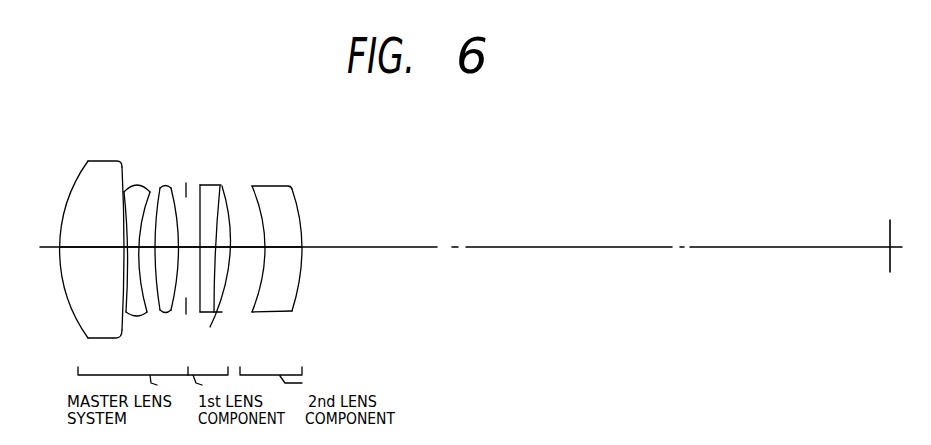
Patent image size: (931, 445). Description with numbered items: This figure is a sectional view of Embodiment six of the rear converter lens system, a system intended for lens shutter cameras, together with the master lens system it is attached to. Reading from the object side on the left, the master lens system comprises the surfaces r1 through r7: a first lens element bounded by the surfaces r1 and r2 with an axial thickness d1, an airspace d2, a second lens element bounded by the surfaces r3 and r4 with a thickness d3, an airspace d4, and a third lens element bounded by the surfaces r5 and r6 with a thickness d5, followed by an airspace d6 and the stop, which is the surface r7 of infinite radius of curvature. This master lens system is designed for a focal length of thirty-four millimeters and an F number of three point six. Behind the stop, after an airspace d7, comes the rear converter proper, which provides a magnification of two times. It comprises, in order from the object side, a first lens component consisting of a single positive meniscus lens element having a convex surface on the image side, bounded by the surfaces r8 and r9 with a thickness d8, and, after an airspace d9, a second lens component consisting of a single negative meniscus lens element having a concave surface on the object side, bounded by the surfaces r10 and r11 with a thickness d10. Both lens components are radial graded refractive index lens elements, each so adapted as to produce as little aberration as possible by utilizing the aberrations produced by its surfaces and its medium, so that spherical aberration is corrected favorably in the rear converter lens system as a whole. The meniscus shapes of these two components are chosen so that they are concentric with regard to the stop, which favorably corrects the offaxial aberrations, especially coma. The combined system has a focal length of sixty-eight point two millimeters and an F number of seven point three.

The radius of curvature of the first surface r1 is at (79, 168).
The radius of curvature of the second surface r2 is at (122, 190).
The radius of curvature of the third surface r3 is at (132, 187).
The radius of curvature of the fourth surface r4 is at (145, 190).
The radius of curvature of the fifth surface r5 is at (156, 186).
The radius of curvature of the sixth surface r6 is at (167, 192).
The stop surface r7 is at (185, 190).
The radius of curvature of the eighth surface r8 is at (200, 190).
The radius of curvature of the ninth surface r9 is at (223, 184).
The radius of curvature of the tenth surface r10 is at (255, 186).
The radius of curvature of the eleventh surface r11 is at (302, 190).
The thickness of the first lens element d1 is at (83, 250).
The airspace between the first and second lens elements d2 is at (127, 272).
The thickness of the second lens element d3 is at (129, 318).
The airspace between the second and third lens elements d4 is at (152, 242).
The thickness of the third lens element d5 is at (163, 313).
The airspace between the third lens element and the stop d6 is at (180, 252).
The airspace between the stop and the first lens component d7 is at (200, 235).
The thickness of the first lens component d8 is at (209, 320).
The airspace between the first and second lens components d9 is at (238, 250).
The thickness of the second lens component d10 is at (290, 253).